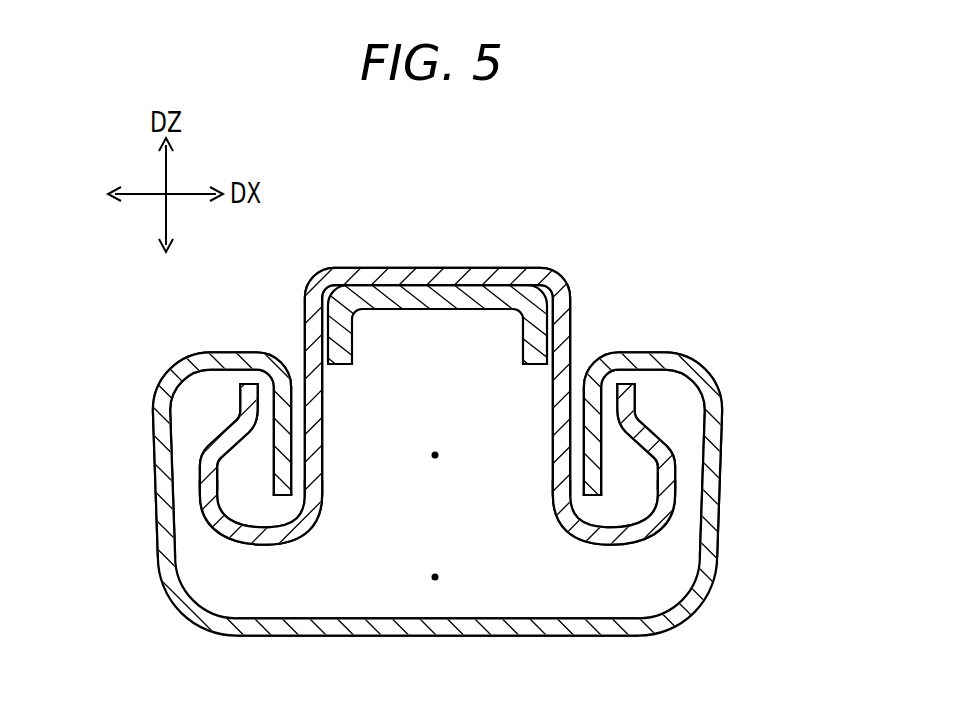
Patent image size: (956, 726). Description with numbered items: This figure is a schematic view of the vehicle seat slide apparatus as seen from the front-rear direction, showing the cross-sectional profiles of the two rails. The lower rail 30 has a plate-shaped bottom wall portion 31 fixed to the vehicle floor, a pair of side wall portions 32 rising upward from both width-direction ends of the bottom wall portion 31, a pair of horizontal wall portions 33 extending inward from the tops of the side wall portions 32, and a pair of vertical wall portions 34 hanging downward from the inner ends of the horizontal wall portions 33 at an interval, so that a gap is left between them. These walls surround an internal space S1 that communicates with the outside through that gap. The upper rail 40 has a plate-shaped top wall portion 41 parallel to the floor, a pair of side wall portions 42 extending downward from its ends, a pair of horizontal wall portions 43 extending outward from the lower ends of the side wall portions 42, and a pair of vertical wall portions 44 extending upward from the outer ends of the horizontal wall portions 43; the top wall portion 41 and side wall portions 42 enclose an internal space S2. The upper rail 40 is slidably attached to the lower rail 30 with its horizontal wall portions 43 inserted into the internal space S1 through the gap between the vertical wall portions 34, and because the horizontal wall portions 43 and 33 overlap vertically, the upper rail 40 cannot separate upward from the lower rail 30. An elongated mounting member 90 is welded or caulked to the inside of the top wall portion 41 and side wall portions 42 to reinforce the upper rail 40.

The lower rail 30 is at (478, 495).
The bottom wall portion 31 is at (420, 639).
The side wall portions 32 is at (156, 511).
The horizontal wall portions 33 is at (223, 350).
The vertical wall portions 34 is at (273, 480).
The upper rail 40 is at (478, 405).
The top wall portion 41 is at (457, 266).
The side wall portions 42 is at (304, 320).
The horizontal wall portions 43 is at (250, 537).
The vertical wall portions 44 is at (200, 450).
The mounting member 90 is at (418, 311).
The internal space S1 is at (439, 577).
The internal space S2 is at (439, 455).